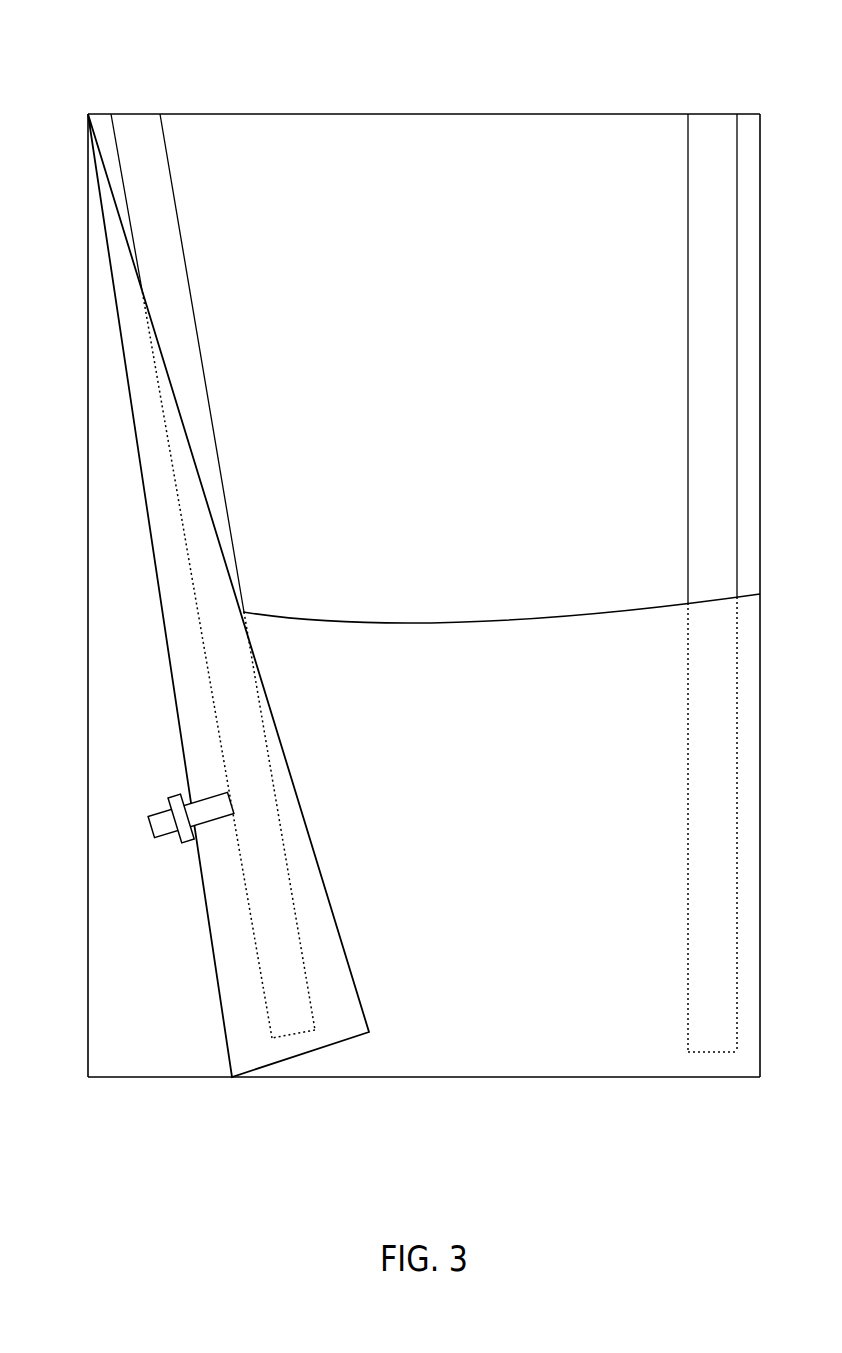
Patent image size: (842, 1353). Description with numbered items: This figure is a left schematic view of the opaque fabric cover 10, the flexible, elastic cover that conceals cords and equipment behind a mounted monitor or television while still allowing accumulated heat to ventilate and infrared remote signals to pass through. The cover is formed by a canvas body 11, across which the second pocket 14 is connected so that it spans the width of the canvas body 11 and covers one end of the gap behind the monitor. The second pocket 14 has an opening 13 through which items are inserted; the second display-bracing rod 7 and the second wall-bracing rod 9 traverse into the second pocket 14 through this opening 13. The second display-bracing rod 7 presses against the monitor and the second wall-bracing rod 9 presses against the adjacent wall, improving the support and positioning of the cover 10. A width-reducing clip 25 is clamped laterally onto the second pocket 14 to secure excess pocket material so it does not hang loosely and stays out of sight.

The opaque fabric cover 10 is at (158, 63).
The canvas body 11 is at (442, 361).
The second pocket 14 is at (515, 860).
The opening 13 is at (510, 582).
The second wall-bracing rod 9 is at (173, 300).
The second display-bracing rod 7 is at (697, 336).
The clip 25 is at (160, 820).